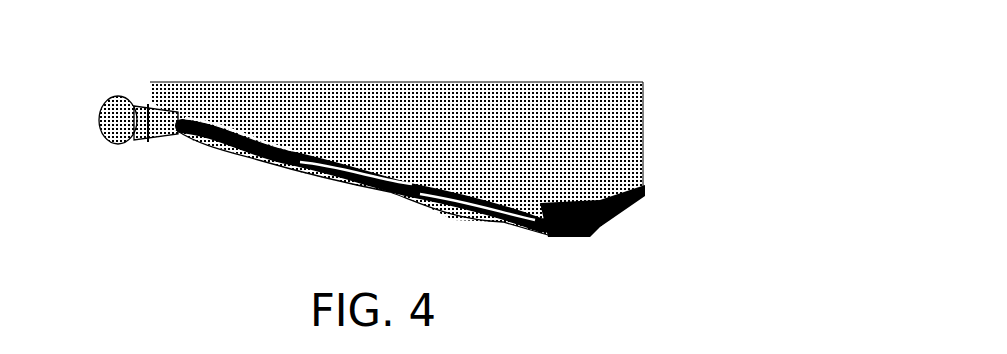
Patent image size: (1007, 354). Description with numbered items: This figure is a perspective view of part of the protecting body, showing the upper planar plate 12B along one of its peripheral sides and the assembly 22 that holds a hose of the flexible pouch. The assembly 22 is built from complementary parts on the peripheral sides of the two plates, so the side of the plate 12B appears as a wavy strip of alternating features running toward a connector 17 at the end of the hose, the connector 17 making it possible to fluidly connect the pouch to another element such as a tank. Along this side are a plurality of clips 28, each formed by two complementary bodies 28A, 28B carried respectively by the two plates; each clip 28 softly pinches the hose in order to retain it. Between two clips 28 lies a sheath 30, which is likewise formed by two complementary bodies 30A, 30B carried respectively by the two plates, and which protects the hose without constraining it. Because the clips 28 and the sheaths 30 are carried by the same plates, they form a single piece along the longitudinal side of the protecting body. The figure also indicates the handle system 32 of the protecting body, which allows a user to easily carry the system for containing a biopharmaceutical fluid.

The planar plate 12B is at (572, 123).
The assembly for holding the two hoses 22 is at (480, 187).
The connector 17 is at (100, 121).
The sheath 30 is at (272, 143).
The complementary body of the sheath 30A is at (287, 177).
The complementary body of the sheath 30B is at (310, 150).
The clip 28 is at (327, 187).
The complementary body of the clip 28A is at (344, 186).
The complementary body of the clip 28B is at (340, 167).
The handle system 32 is at (407, 167).